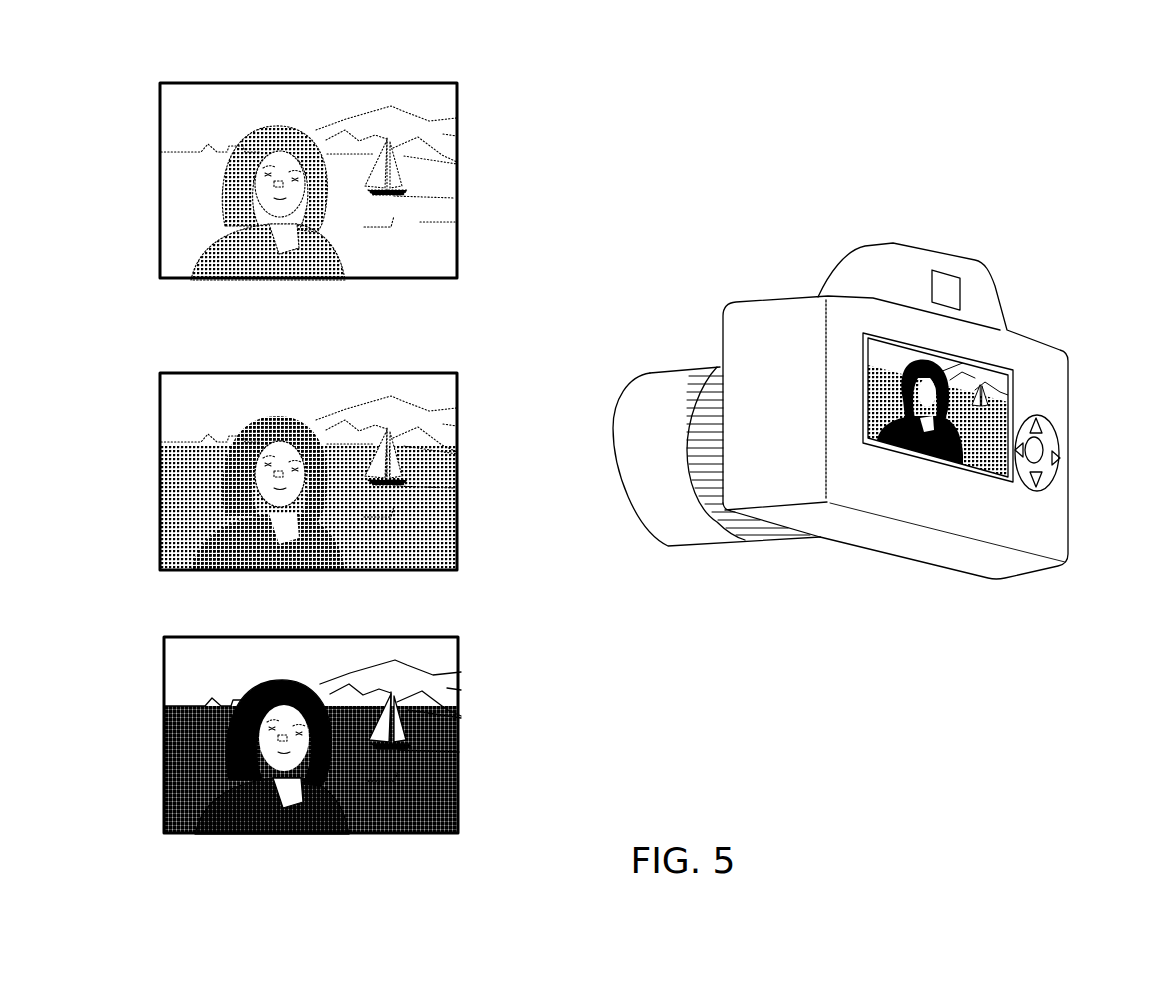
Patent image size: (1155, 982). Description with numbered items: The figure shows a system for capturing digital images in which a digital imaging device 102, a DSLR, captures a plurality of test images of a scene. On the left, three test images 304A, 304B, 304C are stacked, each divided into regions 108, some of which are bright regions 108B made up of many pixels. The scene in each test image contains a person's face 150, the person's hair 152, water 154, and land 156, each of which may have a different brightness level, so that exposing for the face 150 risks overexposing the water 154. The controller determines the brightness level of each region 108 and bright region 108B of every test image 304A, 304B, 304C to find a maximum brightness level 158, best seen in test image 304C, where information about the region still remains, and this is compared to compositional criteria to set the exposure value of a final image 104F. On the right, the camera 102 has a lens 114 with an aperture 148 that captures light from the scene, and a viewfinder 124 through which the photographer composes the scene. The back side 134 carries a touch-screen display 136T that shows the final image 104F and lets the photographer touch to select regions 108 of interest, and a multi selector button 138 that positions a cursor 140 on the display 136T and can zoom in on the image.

The digital imaging device 102 is at (929, 178).
The final image 104F is at (1005, 380).
The region 108 is at (267, 143).
The bright region 108B is at (447, 127).
The lens 114 is at (715, 548).
The viewfinder 124 is at (952, 293).
The back side 134 is at (1057, 518).
The touch-screen display 136T is at (927, 455).
The multi selector button 138 is at (1045, 427).
The cursor 140 is at (277, 185).
The aperture 148 is at (433, 195).
The person's face 150 is at (295, 450).
The person's hair 152 is at (247, 158).
The water 154 is at (443, 512).
The land 156 is at (443, 422).
The maximum brightness level 158 is at (427, 243).
The test image 304A is at (458, 748).
The test image 304B is at (160, 517).
The test image 304C is at (460, 140).